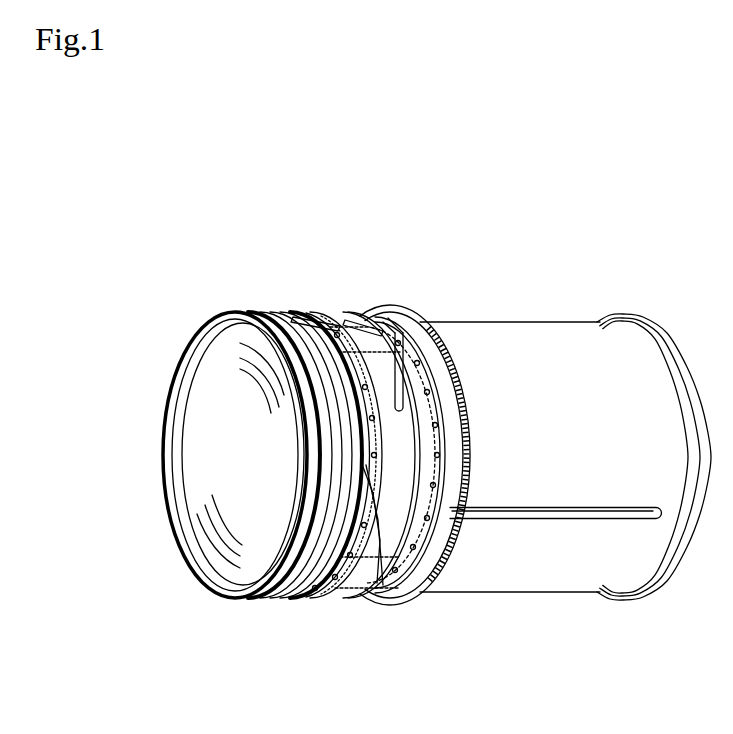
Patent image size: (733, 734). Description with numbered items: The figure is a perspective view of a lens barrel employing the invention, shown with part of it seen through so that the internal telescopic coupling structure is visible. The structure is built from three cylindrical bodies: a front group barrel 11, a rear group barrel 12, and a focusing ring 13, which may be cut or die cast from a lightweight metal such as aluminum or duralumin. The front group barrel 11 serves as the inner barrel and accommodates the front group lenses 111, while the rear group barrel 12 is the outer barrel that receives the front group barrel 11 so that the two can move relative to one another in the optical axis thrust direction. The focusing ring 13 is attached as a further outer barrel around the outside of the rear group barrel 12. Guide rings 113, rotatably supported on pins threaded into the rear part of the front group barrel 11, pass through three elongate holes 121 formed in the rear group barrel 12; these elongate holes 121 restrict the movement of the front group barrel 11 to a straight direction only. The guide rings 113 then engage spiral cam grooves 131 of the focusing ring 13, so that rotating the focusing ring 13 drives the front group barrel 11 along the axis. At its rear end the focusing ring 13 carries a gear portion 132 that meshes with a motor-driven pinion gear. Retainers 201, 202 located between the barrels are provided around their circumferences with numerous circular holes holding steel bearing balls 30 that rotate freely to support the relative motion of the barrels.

The front group barrel 11 is at (311, 294).
The front group lenses 111 is at (256, 343).
The guide rings 113 is at (384, 322).
The rear group barrel 12 is at (541, 309).
The elongate holes 121 is at (383, 588).
The focusing ring 13 is at (473, 428).
The cam grooves 131 is at (397, 523).
The gear portion 132 is at (462, 381).
The retainer 201 is at (336, 317).
The retainer 202 is at (410, 340).
The bearing balls 30 is at (430, 388).